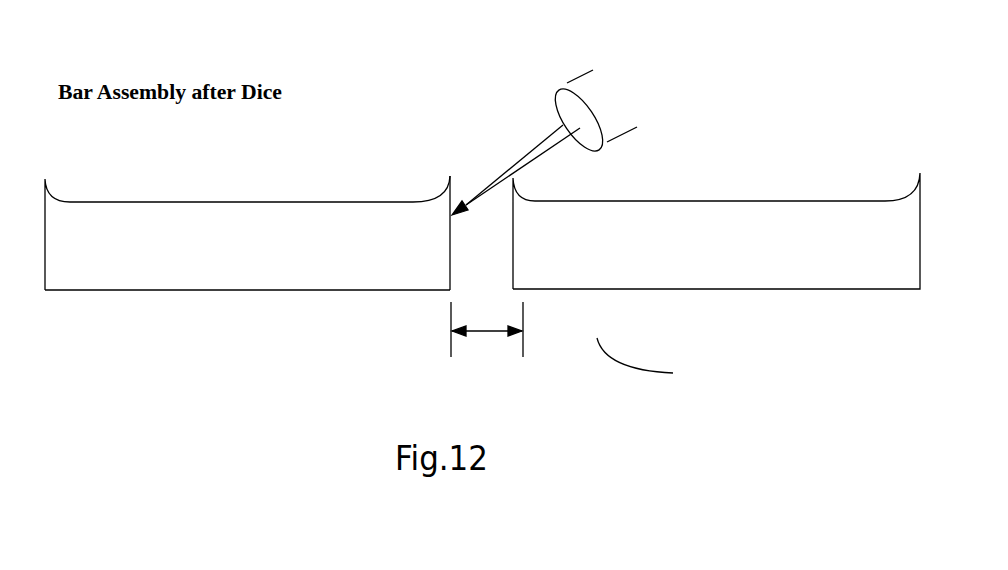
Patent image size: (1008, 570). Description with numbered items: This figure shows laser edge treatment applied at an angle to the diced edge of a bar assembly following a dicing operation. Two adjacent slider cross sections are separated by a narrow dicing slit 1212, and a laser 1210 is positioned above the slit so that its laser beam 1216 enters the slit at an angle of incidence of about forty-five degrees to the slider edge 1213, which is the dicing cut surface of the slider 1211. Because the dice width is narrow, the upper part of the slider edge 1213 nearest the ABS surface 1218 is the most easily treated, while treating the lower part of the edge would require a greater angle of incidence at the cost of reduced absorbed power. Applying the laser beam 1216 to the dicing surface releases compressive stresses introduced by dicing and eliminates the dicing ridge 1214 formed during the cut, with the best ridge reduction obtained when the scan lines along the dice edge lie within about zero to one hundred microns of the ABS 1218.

The laser 1210 is at (605, 114).
The slider 1211 is at (716, 231).
The dicing slit 1212 is at (493, 340).
The slider edge 1213 is at (463, 195).
The dicing ridge 1214 is at (413, 152).
The laser beam 1216 is at (548, 132).
The ABS surface 1218 is at (750, 197).